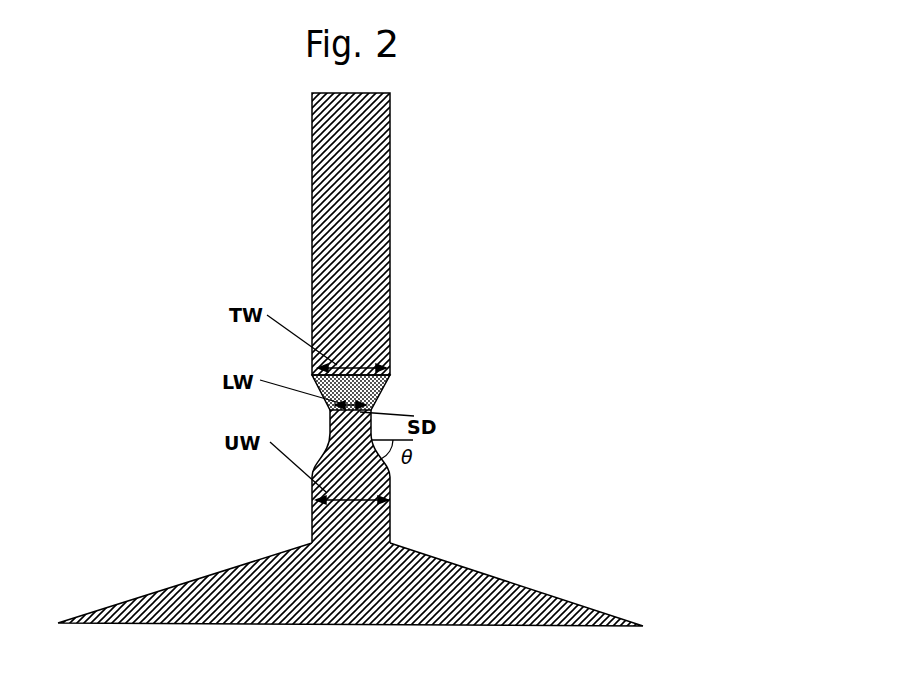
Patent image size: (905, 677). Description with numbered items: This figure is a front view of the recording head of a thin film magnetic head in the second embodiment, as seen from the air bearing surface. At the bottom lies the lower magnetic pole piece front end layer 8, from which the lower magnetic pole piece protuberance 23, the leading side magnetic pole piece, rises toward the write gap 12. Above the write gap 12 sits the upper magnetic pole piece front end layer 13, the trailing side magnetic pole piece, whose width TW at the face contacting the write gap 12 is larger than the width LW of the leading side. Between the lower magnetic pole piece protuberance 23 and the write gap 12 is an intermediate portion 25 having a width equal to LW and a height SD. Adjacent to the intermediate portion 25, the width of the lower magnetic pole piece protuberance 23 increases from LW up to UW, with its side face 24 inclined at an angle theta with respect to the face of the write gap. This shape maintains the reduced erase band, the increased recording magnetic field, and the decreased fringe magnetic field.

The upper magnetic pole piece front end layer 13 is at (390, 227).
The write gap layer 12 is at (384, 386).
The intermediate portion of the lower magnetic pole piece protuberance 25 is at (371, 412).
The side face of the lower magnetic pole piece protuberance 24 is at (375, 470).
The lower magnetic pole piece protuberance 23 is at (390, 526).
The lower magnetic pole piece front end layer 8 is at (470, 570).